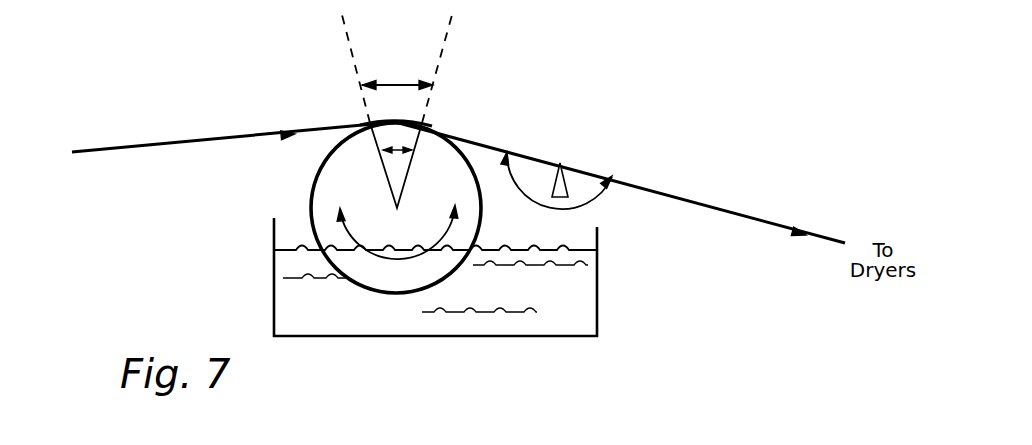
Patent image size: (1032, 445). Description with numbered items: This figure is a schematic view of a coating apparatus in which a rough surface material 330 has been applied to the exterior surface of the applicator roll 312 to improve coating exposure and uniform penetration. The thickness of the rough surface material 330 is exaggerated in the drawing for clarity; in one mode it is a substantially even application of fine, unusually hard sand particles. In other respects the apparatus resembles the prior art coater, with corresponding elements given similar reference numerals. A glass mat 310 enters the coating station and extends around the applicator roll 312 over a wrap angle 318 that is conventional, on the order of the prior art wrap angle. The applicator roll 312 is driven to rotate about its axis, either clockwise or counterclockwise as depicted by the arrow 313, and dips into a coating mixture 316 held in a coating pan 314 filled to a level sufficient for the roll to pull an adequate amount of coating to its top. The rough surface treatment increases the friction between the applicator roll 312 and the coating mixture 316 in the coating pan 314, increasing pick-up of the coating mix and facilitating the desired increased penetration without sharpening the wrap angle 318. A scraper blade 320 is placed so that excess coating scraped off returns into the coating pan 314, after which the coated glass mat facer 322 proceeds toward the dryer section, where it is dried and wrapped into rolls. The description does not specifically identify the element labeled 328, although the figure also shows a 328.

The glass mat 310 is at (169, 152).
The applicator roll 312 is at (300, 183).
The arrow 313 is at (413, 265).
The coating pan 314 is at (535, 336).
The coating mixture 316 is at (565, 287).
The wrap angle 318 is at (398, 87).
The scraper blade 320 is at (567, 183).
The coated glass mat facer 322 is at (686, 189).
The nozzle sweep direction 328 is at (560, 212).
The rough surface material 330 is at (337, 145).